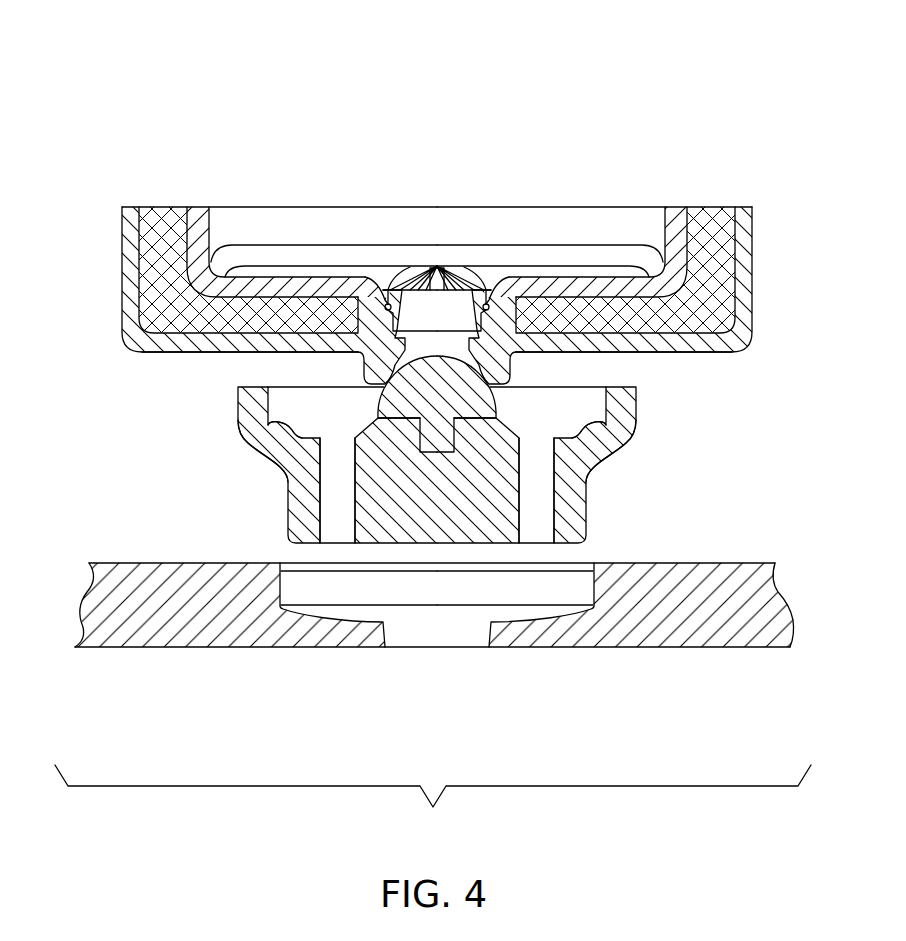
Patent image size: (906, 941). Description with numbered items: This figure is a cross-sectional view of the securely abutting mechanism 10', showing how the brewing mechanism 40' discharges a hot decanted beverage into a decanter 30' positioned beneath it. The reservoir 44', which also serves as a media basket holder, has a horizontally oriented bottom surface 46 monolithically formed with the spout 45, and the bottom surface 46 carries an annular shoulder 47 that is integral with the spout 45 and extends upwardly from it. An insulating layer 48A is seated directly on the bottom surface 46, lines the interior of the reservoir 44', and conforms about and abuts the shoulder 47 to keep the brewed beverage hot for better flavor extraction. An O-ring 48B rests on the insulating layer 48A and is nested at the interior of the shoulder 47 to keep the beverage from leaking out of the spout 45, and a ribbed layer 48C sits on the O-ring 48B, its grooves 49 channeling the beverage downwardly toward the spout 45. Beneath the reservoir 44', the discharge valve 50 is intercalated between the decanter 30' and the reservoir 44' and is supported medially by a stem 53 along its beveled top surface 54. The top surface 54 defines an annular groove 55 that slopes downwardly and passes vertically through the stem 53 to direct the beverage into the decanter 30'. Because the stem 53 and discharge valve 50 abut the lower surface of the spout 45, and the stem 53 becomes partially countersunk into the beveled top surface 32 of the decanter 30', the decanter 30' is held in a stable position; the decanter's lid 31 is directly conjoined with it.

The securely abutting mechanism 10' is at (433, 416).
The decanter 30' is at (434, 571).
The lid 31 is at (123, 597).
The top surface 32 is at (460, 593).
The brewing mechanism 40' is at (437, 192).
The reservoir 44' is at (441, 295).
The spout 45 is at (373, 364).
The bottom surface 46 is at (203, 352).
The annular shoulder 47 is at (386, 303).
The insulating layer 48A is at (170, 321).
The O-ring 48B is at (466, 308).
The ribbed layer 48C is at (441, 268).
The grooves 49 is at (261, 284).
The discharge valve 50 is at (462, 408).
The stem 53 is at (289, 503).
The top surface 54 is at (284, 426).
The groove 55 is at (340, 527).